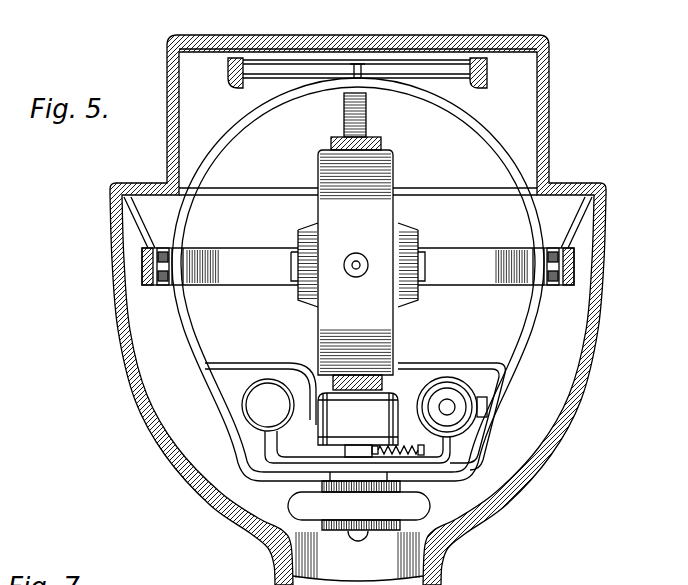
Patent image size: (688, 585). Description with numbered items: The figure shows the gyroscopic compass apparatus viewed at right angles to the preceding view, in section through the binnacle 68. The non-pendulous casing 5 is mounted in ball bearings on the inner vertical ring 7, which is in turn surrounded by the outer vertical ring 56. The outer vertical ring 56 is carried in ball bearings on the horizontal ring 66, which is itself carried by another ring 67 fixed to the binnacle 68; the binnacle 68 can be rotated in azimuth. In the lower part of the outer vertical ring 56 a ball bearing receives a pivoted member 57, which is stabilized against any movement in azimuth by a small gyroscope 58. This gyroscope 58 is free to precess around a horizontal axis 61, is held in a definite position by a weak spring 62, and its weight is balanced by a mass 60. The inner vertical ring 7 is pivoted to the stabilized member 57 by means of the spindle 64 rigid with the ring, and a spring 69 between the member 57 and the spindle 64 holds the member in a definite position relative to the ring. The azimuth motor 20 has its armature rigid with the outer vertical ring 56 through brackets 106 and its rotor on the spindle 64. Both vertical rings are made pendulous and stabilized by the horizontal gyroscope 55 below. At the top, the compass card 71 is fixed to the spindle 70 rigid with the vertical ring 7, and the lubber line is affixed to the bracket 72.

The casing 5 is at (393, 196).
The inner vertical ring 7 is at (378, 141).
The azimuth motor 20 is at (340, 418).
The horizontal gyroscope 55 is at (359, 506).
The outer vertical ring 56 is at (505, 165).
The stabilized member 57 is at (265, 448).
The small gyroscope 58 is at (450, 380).
The mass 60 is at (268, 405).
The horizontal axis 61 is at (332, 422).
The weak spring 62 is at (487, 420).
The spindle 64 is at (345, 450).
The horizontal ring 66 is at (163, 248).
The ring 67 is at (160, 285).
The binnacle 68 is at (118, 348).
The spring 69 is at (412, 456).
The spindle 70 is at (352, 72).
The compass card 71 is at (418, 58).
The bracket 72 is at (487, 78).
The brackets 106 is at (247, 367).